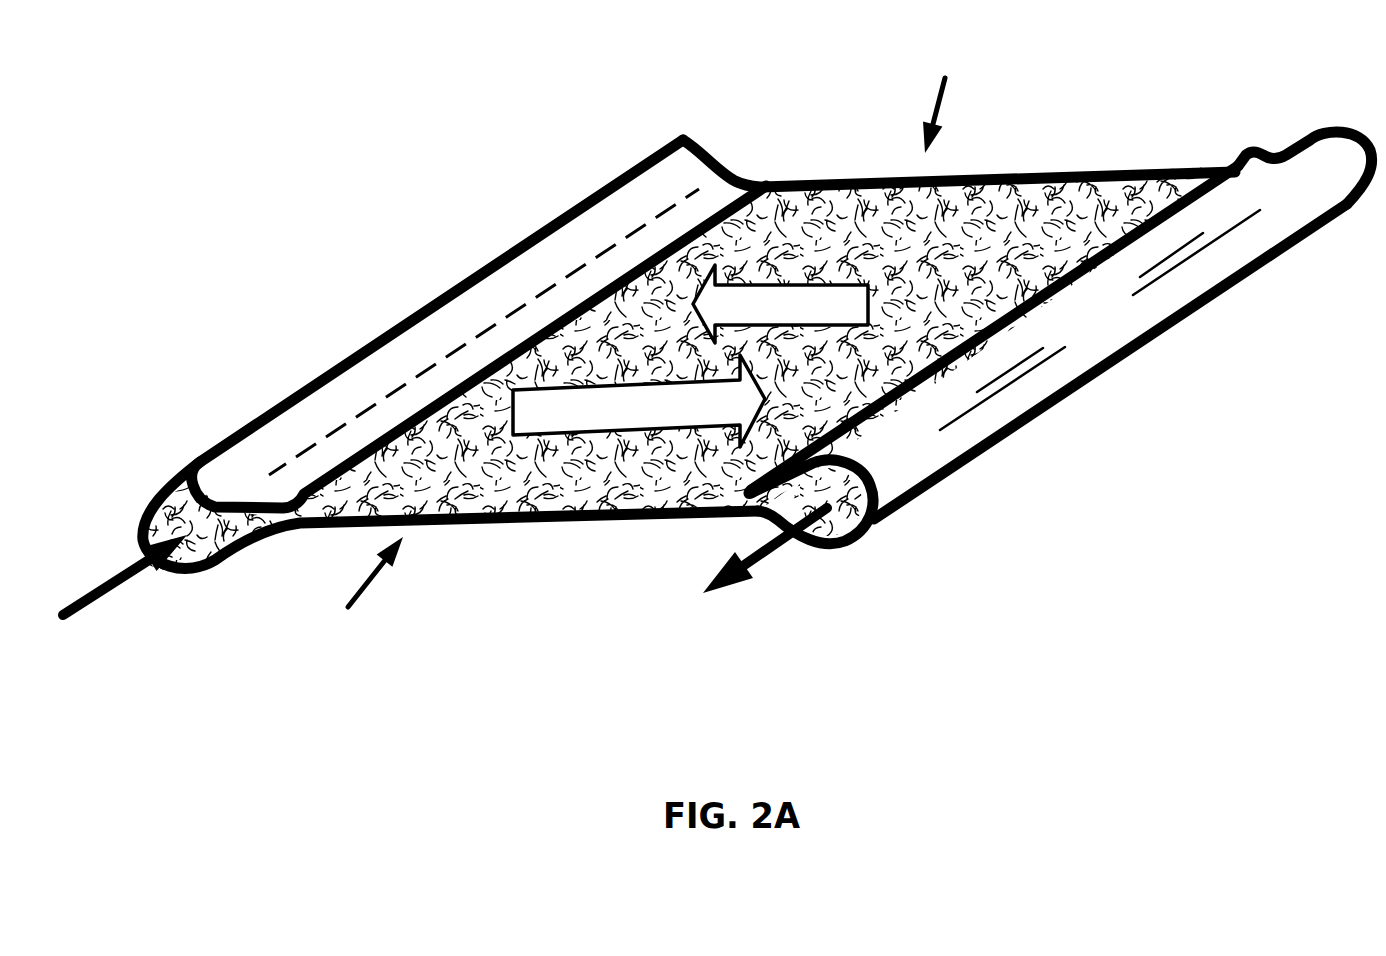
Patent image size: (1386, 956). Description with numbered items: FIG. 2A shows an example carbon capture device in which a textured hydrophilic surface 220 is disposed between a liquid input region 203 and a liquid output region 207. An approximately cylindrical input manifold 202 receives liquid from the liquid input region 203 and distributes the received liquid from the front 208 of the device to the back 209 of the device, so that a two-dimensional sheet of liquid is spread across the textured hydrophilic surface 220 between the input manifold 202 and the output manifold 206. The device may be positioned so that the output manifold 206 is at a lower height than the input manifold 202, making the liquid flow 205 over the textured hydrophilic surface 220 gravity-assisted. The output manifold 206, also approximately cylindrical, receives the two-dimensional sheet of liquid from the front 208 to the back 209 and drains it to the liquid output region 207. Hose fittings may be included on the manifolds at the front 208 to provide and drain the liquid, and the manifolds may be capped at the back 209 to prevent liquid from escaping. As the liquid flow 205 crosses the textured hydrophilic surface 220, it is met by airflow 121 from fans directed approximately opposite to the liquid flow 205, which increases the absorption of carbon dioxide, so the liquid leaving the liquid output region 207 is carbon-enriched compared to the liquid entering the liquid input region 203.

The input manifold 202 is at (638, 193).
The output manifold 206 is at (1277, 228).
The textured hydrophilic surface 220 is at (822, 367).
The airflow 121 is at (842, 316).
The liquid flow 205 is at (712, 417).
The liquid input region 203 is at (110, 593).
The liquid output region 207 is at (775, 552).
The front of device 208 is at (364, 589).
The back of device 209 is at (942, 96).